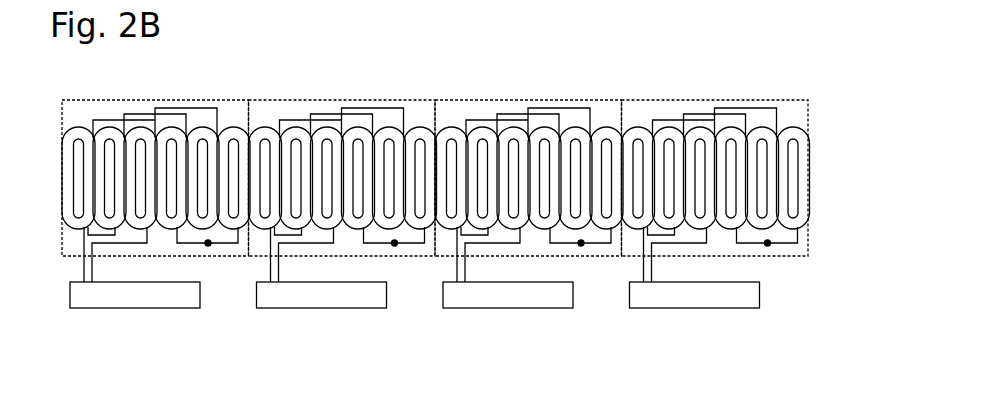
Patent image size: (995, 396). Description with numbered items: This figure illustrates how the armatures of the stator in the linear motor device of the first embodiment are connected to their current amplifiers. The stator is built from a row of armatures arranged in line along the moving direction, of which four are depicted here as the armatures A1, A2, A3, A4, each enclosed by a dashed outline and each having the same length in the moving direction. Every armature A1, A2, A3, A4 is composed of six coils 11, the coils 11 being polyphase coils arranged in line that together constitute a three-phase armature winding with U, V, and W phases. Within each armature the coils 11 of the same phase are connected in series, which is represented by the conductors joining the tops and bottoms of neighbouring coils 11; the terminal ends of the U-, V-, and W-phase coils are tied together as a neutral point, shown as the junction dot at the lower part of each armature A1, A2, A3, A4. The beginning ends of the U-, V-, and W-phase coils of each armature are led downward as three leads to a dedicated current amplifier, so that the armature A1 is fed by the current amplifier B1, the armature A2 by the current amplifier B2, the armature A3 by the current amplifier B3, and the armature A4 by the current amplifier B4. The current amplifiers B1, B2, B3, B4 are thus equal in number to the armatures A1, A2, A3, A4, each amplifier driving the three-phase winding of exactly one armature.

The coil 11 is at (228, 130).
The armature A1 is at (155, 158).
The armature A2 is at (342, 158).
The armature A3 is at (528, 158).
The armature A4 is at (715, 158).
The current amplifier B1 is at (135, 311).
The current amplifier B2 is at (322, 311).
The current amplifier B3 is at (508, 311).
The current amplifier B4 is at (695, 311).